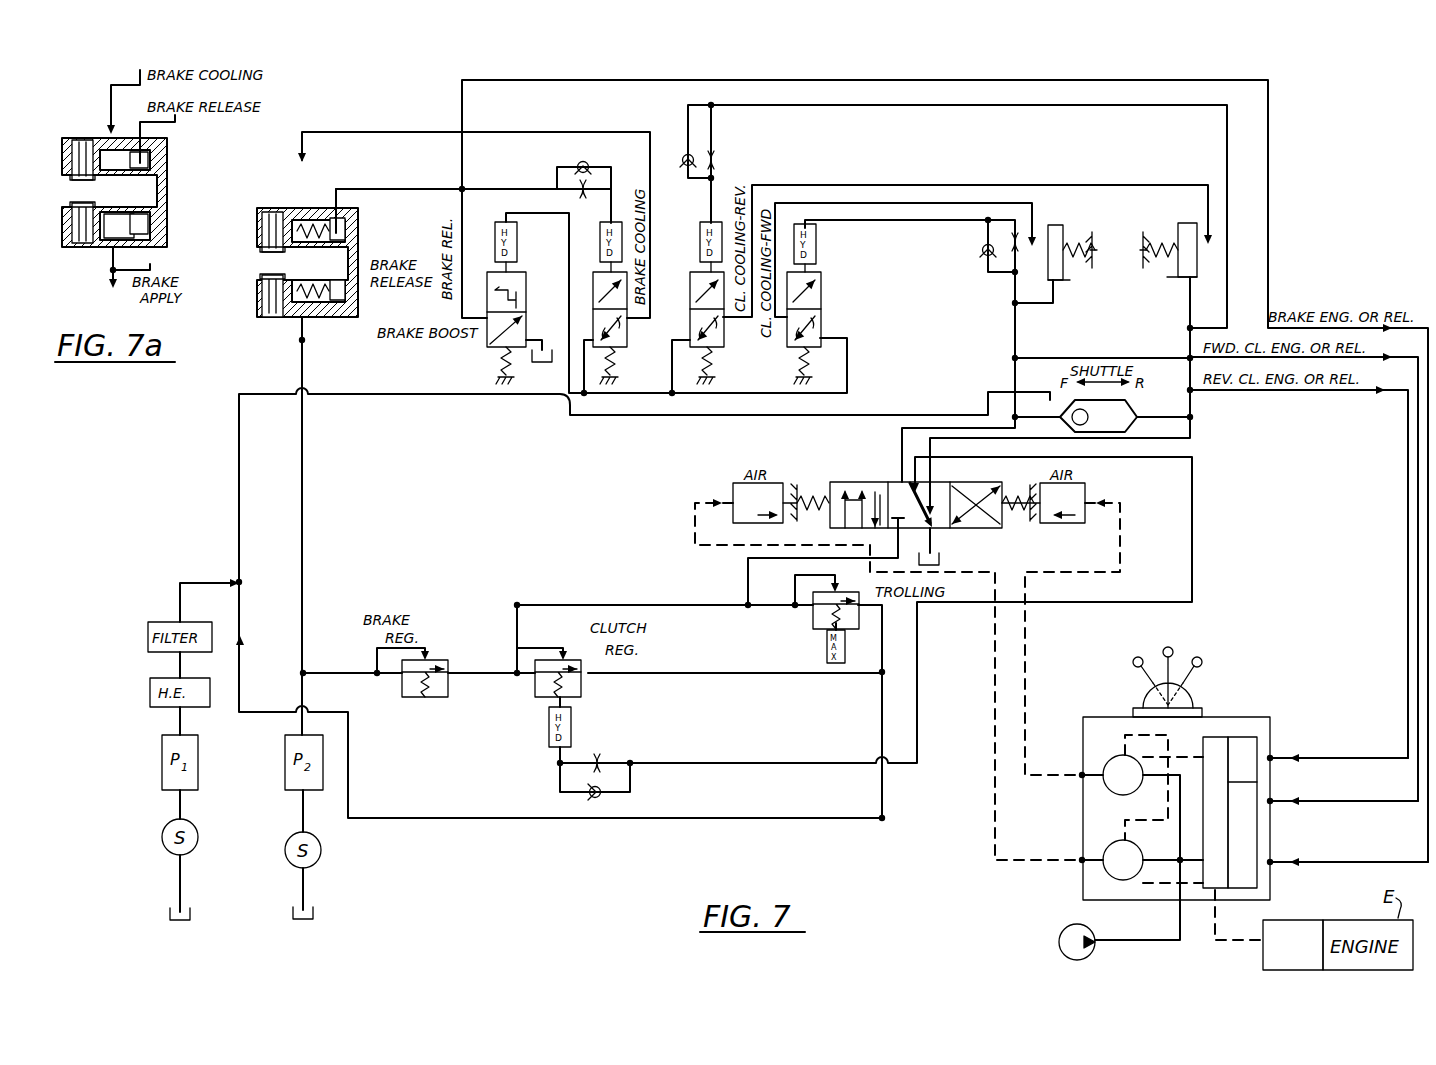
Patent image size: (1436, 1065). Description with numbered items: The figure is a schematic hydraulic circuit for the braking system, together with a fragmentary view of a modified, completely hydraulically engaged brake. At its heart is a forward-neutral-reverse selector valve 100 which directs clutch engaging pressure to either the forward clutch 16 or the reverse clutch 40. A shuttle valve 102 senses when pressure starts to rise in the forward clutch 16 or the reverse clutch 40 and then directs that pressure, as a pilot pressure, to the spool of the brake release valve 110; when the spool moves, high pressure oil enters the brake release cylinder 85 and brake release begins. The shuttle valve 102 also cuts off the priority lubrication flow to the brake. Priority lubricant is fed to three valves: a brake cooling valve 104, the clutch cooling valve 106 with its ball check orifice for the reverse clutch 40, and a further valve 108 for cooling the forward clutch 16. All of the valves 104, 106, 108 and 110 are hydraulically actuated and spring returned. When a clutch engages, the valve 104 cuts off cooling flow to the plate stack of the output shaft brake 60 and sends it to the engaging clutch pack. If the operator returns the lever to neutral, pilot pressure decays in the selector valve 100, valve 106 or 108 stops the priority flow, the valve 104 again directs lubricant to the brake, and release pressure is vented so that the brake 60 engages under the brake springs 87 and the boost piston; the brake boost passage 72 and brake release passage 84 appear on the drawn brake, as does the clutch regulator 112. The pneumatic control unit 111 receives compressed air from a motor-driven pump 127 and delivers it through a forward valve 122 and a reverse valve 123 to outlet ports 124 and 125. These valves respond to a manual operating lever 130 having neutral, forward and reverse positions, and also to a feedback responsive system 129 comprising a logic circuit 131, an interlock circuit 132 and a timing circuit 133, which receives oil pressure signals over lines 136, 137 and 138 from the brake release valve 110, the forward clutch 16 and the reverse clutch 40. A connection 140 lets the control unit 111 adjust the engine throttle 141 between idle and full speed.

In FIG. 7, the forward clutch 16 is at (1068, 225).
In FIG. 7, the reverse clutch 40 is at (1185, 222).
In FIG. 7A, the output shaft brake 60 is at (82, 138).
In FIG. 7, the output shaft brake 60 is at (323, 241).
In FIG. 7A, the brake apply / boost chamber 72 is at (112, 232).
In FIG. 7, the brake apply / boost chamber 72 is at (313, 302).
In FIG. 7A, the brake release passage 84 is at (174, 122).
In FIG. 7, the brake release passage 84 is at (425, 189).
In FIG. 7A, the brake release cylinder 85 is at (140, 227).
In FIG. 7, the brake release cylinder 85 is at (332, 295).
In FIG. 7, the brake springs 87 is at (312, 227).
In FIG. 7, the forward-neutral-reverse selector valve 100 is at (873, 480).
In FIG. 7, the shuttle valve 102 is at (1131, 406).
In FIG. 7, the brake cooling valve 104 is at (627, 342).
In FIG. 7, the clutch cooling valve 106 is at (723, 347).
In FIG. 7, the forward clutch cooling valve 108 is at (820, 310).
In FIG. 7, the brake release valve 110 is at (488, 347).
In FIG. 7, the pneumatic control unit 111 is at (1183, 778).
In FIG. 7, the clutch pressure regulator 112 is at (591, 692).
In FIG. 7, the forward valve 122 is at (1113, 840).
In FIG. 7, the reverse valve 123 is at (1115, 757).
In FIG. 7, the outlet port 124 is at (1082, 858).
In FIG. 7, the outlet port 125 is at (1082, 773).
In FIG. 7, the motor-driven pump 127 is at (1094, 954).
In FIG. 7, the feedback responsive system 129 is at (1233, 738).
In FIG. 7, the manual operating lever 130 is at (1174, 660).
In FIG. 7, the logic circuit 131 is at (1257, 740).
In FIG. 7, the interlock circuit 132 is at (1257, 887).
In FIG. 7, the timing circuit 133 is at (1213, 888).
In FIG. 7, the oil supply line 136 is at (1408, 838).
In FIG. 7, the oil supply line 137 is at (1390, 777).
In FIG. 7, the oil supply line 138 is at (1383, 733).
In FIG. 7, the connection 140 is at (1217, 922).
In FIG. 7, the throttle 141 is at (1310, 920).